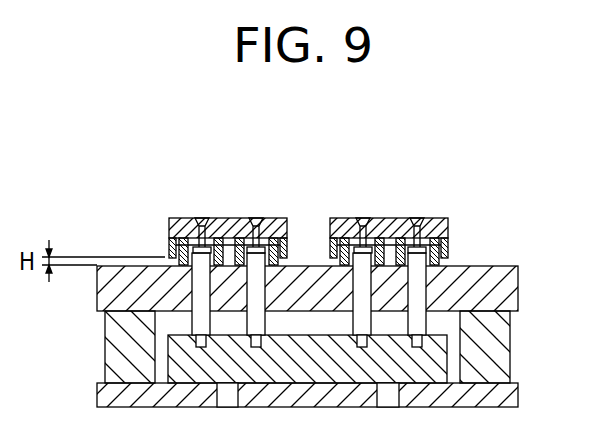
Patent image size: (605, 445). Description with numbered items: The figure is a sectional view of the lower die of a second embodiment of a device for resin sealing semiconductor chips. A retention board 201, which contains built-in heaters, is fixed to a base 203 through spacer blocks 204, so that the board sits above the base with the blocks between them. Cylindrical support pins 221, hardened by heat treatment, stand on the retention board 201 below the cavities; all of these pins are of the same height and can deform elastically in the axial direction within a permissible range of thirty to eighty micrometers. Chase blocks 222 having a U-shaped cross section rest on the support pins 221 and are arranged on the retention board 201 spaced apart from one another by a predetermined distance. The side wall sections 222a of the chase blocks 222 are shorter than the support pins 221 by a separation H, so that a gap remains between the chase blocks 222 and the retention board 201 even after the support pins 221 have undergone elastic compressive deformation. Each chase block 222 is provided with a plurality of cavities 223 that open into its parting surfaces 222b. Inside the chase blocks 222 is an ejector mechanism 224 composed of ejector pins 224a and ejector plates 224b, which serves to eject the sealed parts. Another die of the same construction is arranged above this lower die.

The retention board 201 is at (485, 293).
The base 203 is at (115, 397).
The spacer blocks 204 is at (130, 353).
The support pins 221 is at (168, 232).
The chase blocks 222 is at (252, 210).
The side wall sections 222a is at (167, 247).
The parting surfaces 222b is at (215, 218).
The cavities 223 is at (198, 218).
The ejector mechanism 224 is at (227, 218).
The ejector pins 224a is at (257, 218).
The ejector plates 224b is at (284, 255).